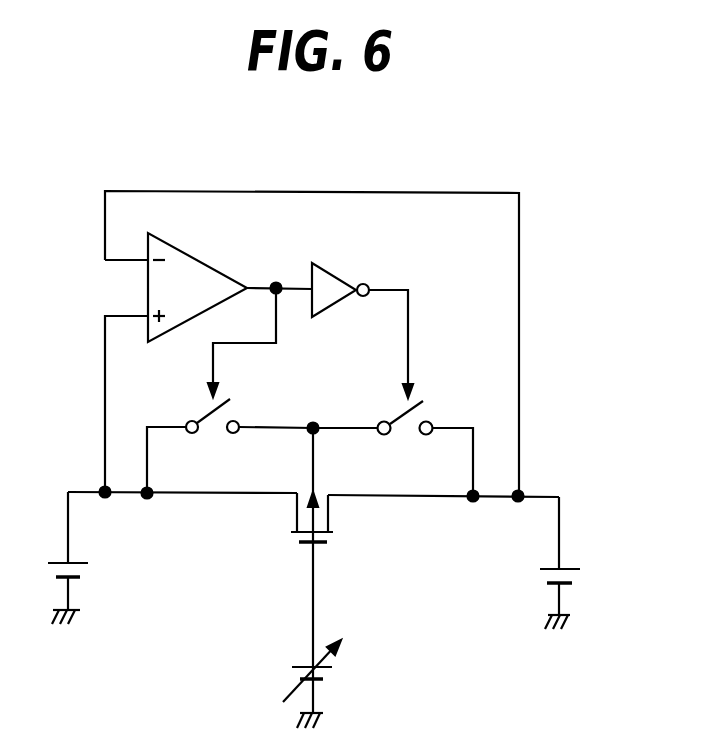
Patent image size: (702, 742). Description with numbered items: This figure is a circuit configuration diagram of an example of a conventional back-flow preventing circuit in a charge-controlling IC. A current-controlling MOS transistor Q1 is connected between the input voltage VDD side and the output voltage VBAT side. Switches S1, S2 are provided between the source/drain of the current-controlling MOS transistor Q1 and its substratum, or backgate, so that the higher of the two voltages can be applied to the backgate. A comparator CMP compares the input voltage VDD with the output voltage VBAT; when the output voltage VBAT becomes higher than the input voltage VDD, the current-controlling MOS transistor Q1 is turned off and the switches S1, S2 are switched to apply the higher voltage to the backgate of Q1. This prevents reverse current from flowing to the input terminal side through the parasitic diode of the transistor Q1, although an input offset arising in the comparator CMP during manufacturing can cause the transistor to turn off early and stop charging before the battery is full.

The comparator CMP is at (197, 286).
The switch S1 is at (230, 445).
The switch S2 is at (393, 448).
The current-controlling MOS transistor Q1 is at (328, 570).
The input voltage VDD is at (62, 543).
The output voltage VBAT is at (564, 547).